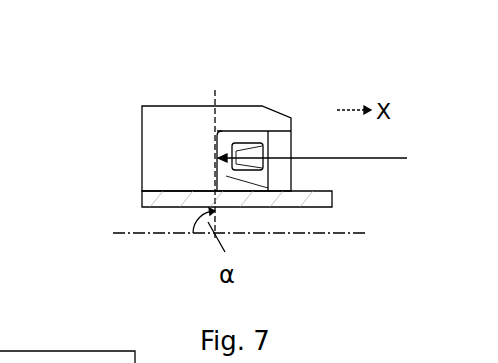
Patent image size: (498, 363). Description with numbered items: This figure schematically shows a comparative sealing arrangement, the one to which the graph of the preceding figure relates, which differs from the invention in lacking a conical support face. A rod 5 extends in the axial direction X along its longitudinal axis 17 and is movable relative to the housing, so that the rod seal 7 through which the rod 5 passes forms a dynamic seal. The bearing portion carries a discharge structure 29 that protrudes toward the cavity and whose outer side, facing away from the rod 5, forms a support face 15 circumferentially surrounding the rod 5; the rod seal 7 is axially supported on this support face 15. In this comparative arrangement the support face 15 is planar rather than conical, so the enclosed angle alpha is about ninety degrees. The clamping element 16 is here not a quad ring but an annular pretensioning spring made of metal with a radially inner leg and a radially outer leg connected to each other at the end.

The discharge structure 29 is at (175, 155).
The clamping element 16 is at (250, 143).
The support face 15 is at (331, 159).
The rod seal 7 is at (226, 176).
The rod 5 is at (152, 198).
The longitudinal axis 17 is at (347, 233).